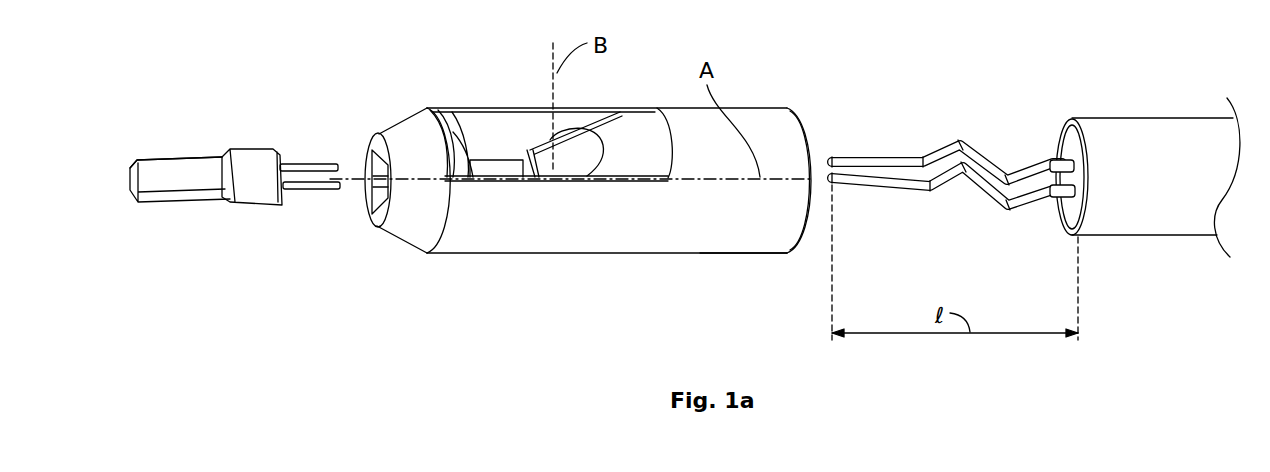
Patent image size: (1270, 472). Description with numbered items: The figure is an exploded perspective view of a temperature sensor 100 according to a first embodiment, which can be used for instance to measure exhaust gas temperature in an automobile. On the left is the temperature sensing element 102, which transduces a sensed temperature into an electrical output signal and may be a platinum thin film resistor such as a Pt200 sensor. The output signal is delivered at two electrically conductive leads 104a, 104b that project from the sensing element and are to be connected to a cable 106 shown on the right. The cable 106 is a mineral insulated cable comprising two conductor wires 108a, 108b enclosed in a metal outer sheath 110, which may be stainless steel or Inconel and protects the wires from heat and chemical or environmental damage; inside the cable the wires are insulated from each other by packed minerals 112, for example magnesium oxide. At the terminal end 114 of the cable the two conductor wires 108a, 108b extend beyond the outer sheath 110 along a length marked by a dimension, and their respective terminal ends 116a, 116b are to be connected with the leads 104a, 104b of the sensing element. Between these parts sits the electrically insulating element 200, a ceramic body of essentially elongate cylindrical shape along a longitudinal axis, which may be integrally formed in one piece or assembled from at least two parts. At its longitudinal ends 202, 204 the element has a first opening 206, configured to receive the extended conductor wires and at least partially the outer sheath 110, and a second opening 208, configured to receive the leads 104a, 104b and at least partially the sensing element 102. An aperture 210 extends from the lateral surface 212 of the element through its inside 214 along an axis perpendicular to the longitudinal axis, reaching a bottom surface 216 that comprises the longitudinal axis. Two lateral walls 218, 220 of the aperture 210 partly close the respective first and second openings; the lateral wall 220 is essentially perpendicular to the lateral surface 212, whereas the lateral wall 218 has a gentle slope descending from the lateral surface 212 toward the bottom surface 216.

The temperature sensor 100 is at (186, 82).
The temperature sensing element 102 is at (178, 155).
The electrically conductive lead 104a is at (298, 190).
The electrically conductive lead 104b is at (295, 165).
The cable 106 is at (1157, 118).
The conductor wire 108a is at (1033, 205).
The conductor wire 108b is at (1023, 163).
The outer sheath 110 is at (1067, 152).
The packed minerals 112 is at (1058, 205).
The terminal end 114 is at (1062, 142).
The terminal end 116a is at (852, 180).
The terminal end 116b is at (843, 157).
The electrically insulating element 200 is at (690, 105).
The longitudinal end 202 is at (812, 228).
The longitudinal end 204 is at (367, 218).
The first opening 206 is at (806, 125).
The second opening 208 is at (367, 168).
The aperture 210 is at (489, 121).
The lateral surface 212 is at (473, 230).
The inside 214 is at (523, 163).
The bottom surface 216 is at (446, 140).
The lateral wall 218 is at (570, 156).
The lateral wall 220 is at (440, 150).